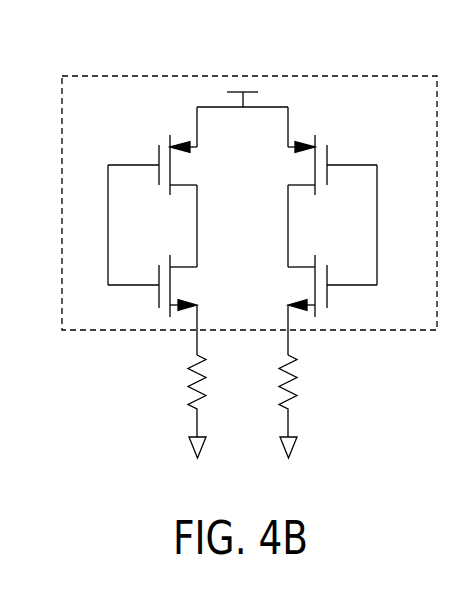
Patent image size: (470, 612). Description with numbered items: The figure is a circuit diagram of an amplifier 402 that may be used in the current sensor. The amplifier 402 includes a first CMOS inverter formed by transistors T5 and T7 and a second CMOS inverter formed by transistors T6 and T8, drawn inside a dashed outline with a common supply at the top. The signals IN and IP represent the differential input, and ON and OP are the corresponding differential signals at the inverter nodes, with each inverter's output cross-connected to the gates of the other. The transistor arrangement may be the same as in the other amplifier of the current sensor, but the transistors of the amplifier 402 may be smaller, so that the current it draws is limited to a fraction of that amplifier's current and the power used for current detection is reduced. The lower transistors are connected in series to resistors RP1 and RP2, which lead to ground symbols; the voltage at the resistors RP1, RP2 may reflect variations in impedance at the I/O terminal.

The amplifier 402 is at (112, 72).
The transistor T5 is at (167, 165).
The transistor T6 is at (318, 165).
The transistor T7 is at (167, 286).
The transistor T8 is at (318, 286).
The resistor RP1 is at (176, 406).
The resistor RP2 is at (315, 406).